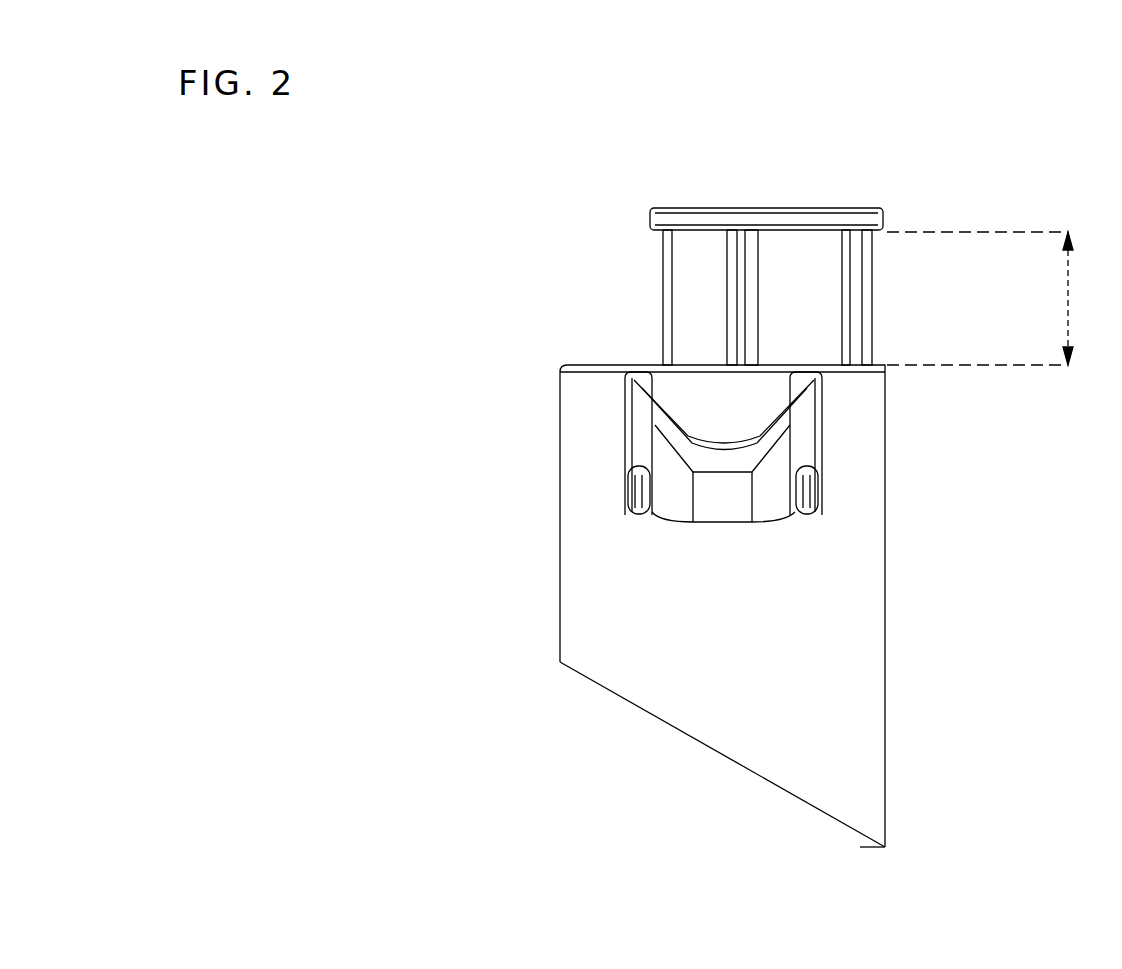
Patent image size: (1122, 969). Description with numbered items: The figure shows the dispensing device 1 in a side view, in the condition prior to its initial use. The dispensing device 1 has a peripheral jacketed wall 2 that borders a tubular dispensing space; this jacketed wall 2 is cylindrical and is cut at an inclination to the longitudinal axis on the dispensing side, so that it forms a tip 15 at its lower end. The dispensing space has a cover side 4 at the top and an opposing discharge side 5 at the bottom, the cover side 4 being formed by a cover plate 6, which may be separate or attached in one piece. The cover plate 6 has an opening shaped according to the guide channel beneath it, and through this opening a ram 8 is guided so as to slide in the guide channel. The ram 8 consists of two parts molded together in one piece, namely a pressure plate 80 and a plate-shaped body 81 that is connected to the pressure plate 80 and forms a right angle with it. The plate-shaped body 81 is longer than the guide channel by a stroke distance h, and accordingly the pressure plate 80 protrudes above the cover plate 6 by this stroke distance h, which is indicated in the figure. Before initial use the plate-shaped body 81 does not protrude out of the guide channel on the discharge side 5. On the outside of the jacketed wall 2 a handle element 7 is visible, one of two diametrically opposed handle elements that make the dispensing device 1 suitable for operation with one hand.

The dispensing device 1 is at (540, 427).
The peripheral jacketed wall 2 is at (797, 582).
The cover side 4 is at (882, 333).
The discharge side 5 is at (638, 743).
The cover plate 6 is at (607, 363).
The handle element 7 is at (803, 437).
The ram 8 is at (893, 223).
The tip 15 is at (885, 846).
The pressure plate 80 is at (710, 218).
The plate-shaped body 81 is at (807, 267).
The stroke distance h is at (994, 298).